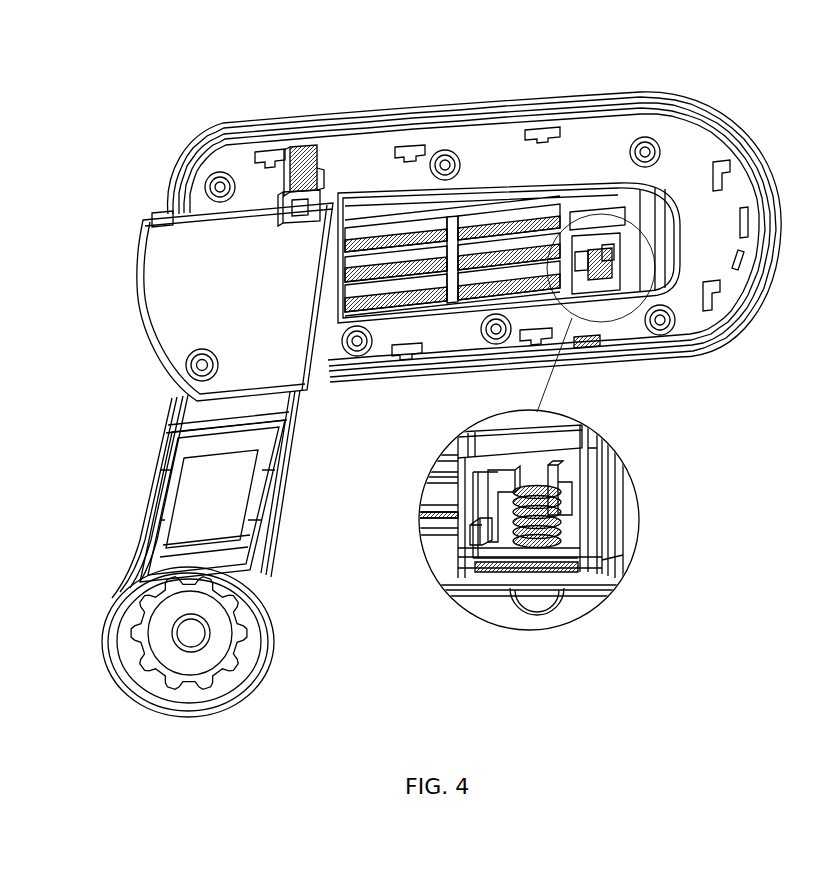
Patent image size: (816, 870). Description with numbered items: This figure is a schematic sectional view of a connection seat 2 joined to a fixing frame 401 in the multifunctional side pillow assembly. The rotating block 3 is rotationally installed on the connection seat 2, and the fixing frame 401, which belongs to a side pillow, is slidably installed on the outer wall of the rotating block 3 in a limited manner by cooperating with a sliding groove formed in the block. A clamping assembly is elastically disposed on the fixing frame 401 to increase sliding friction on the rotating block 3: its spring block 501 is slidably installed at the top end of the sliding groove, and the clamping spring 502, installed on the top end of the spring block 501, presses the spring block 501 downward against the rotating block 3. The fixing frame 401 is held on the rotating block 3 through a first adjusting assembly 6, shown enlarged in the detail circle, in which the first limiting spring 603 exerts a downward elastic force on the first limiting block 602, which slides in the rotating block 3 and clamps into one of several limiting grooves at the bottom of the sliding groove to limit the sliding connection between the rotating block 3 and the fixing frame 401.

The connection seat 2 is at (212, 498).
The rotating block 3 is at (483, 246).
The first adjusting assembly 6 is at (557, 518).
The fixing frame 401 is at (258, 302).
The spring block 501 is at (284, 187).
The clamping spring 502 is at (300, 150).
The first limiting block 602 is at (551, 603).
The first limiting spring 603 is at (514, 524).